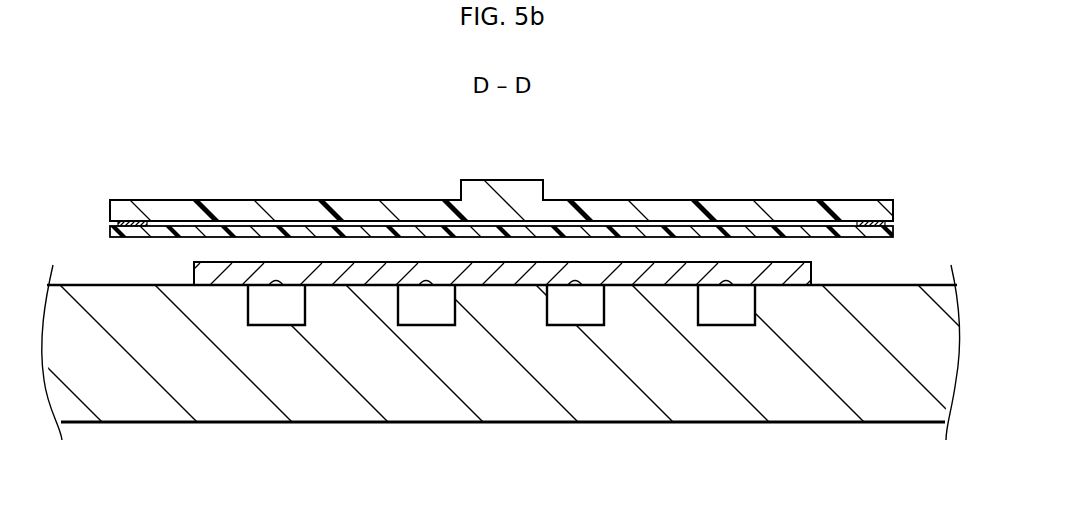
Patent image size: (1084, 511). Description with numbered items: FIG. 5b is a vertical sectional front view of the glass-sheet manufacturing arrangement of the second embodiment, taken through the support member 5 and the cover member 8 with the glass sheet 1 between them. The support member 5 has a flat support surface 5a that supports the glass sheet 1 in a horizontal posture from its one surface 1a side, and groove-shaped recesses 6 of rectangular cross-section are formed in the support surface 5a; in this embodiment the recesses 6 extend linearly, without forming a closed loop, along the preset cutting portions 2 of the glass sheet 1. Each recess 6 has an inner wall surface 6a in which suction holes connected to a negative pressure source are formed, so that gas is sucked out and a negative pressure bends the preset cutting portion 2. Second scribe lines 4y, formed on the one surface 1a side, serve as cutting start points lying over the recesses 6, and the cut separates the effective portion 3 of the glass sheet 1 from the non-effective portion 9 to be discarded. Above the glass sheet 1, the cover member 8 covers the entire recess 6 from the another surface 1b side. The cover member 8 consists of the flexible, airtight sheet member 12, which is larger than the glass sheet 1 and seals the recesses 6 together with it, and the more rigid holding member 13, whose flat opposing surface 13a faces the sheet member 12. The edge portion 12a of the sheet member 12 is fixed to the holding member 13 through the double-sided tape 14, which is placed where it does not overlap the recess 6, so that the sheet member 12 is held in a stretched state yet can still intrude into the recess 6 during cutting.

The glass sheet 1 is at (819, 270).
The one surface 1a is at (527, 266).
The another surface 1b is at (527, 266).
The preset cutting portion 2 is at (276, 283).
The effective portion 3 is at (343, 273).
The second scribe line 4y is at (501, 305).
The support member 5 is at (899, 432).
The support surface 5a is at (925, 285).
The recess 6 is at (267, 338).
The inner wall surface 6a is at (290, 318).
The cover member 8 is at (628, 165).
The non-effective portion 9 is at (205, 287).
The sheet member 12 is at (110, 232).
The edge portion 12a is at (138, 238).
The holding member 13 is at (110, 210).
The opposing surface 13a is at (356, 232).
The double-sided tape 14 is at (135, 222).